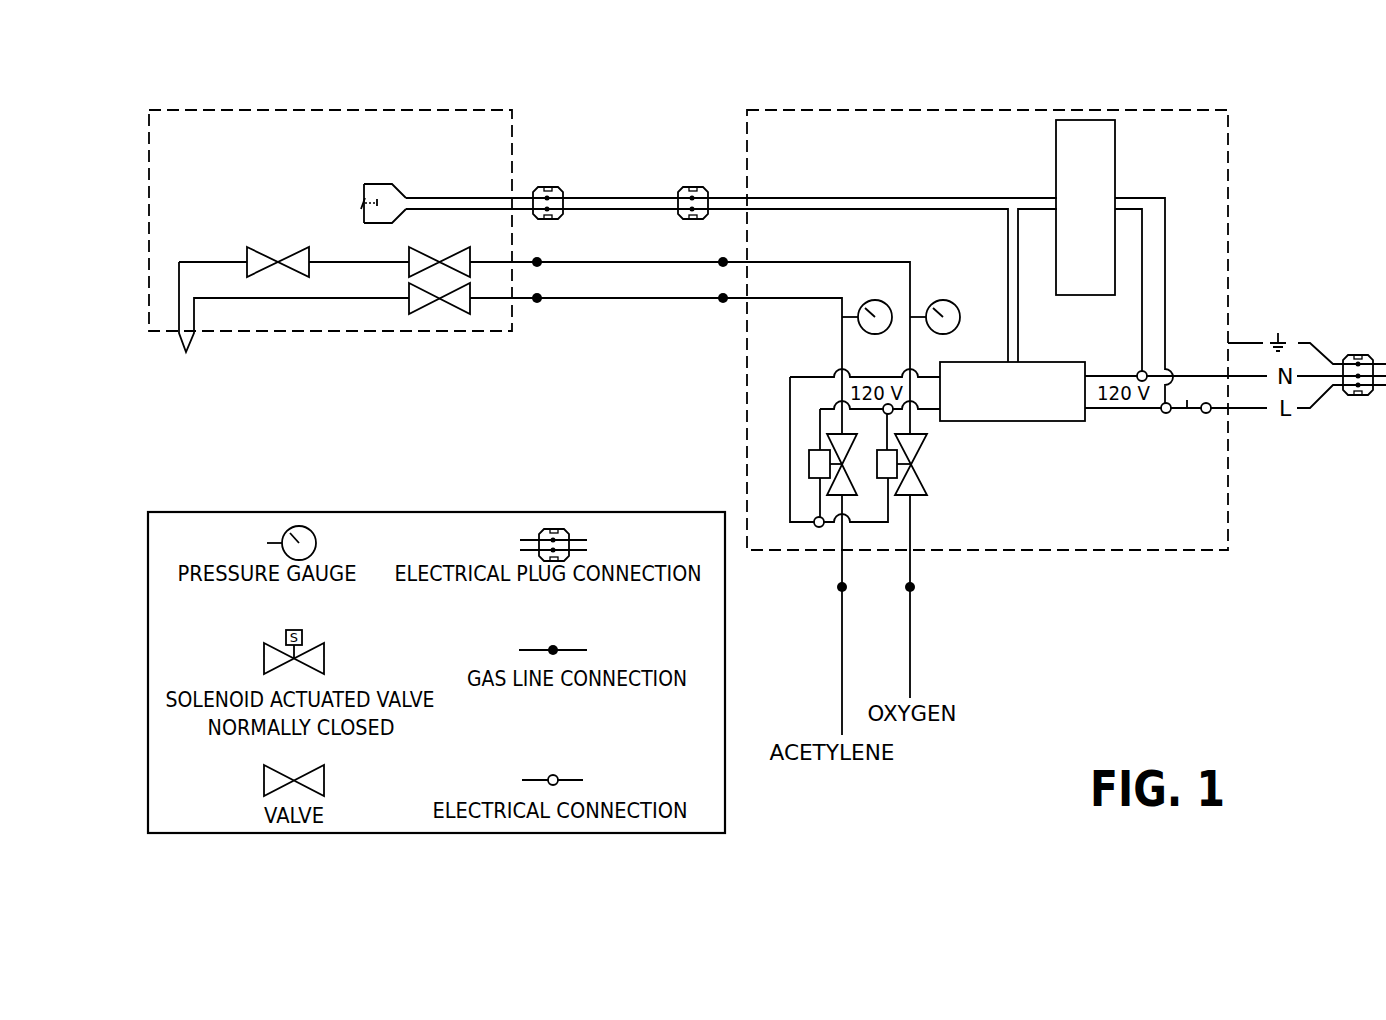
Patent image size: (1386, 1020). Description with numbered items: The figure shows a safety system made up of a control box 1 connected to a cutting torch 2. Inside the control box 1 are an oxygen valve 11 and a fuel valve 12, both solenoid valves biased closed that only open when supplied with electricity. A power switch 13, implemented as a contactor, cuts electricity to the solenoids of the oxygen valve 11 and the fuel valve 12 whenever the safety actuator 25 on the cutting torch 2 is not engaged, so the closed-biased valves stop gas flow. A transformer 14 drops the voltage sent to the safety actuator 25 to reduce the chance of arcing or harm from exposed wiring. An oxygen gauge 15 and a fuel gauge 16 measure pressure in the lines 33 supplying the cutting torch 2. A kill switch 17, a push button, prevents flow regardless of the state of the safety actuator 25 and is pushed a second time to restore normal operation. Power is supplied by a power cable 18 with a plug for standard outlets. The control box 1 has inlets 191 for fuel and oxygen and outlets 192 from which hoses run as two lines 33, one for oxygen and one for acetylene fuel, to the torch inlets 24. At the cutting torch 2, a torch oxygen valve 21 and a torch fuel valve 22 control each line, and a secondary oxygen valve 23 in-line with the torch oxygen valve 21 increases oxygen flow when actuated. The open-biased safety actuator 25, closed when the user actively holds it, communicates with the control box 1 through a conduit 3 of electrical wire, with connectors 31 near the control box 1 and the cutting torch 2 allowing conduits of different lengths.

The control box 1 is at (808, 104).
The cutting torch 2 is at (207, 104).
The conduit 3 is at (638, 209).
The oxygen valve 11 is at (920, 445).
The fuel valve 12 is at (857, 478).
The power switch 13 is at (1050, 362).
The transformer 14 is at (1115, 163).
The oxygen gauge 15 is at (960, 317).
The fuel gauge 16 is at (875, 300).
The kill switch 17 is at (1185, 412).
The power cable 18 is at (1357, 355).
The torch oxygen valve 21 is at (427, 247).
The torch fuel valve 22 is at (453, 314).
The secondary oxygen valve 23 is at (290, 272).
The torch inlets 24 is at (537, 262).
The safety actuator 25 is at (392, 184).
The connectors 31 is at (548, 187).
The lines 33 is at (565, 262).
The inlets 191 is at (942, 583).
The outlets 192 is at (723, 262).